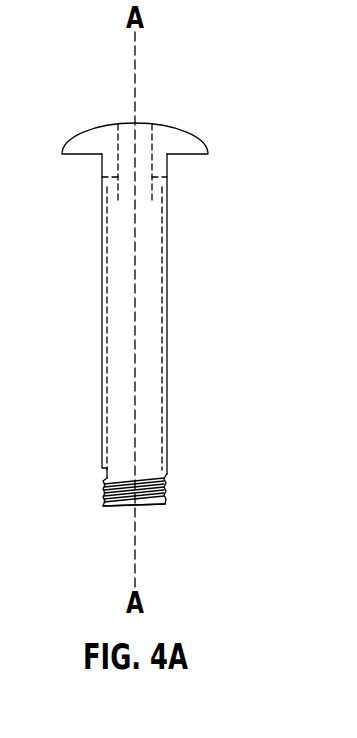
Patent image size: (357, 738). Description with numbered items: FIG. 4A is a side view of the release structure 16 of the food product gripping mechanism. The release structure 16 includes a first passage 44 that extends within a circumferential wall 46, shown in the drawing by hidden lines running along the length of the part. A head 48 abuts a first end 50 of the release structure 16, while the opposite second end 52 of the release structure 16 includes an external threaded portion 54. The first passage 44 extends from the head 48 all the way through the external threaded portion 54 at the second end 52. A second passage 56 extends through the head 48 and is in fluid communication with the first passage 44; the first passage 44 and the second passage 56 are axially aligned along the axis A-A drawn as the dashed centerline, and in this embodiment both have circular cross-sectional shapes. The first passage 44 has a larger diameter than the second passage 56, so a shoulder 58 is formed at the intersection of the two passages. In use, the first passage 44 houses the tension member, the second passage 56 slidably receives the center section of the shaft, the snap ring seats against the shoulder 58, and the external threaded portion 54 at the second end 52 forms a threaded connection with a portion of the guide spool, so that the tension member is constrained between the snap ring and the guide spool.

The release structure 16 is at (95, 97).
The first passage 44 is at (143, 507).
The circumferential wall 46 is at (170, 338).
The head 48 is at (197, 140).
The first end 50 is at (170, 186).
The second end 52 is at (170, 470).
The external threaded portion 54 is at (165, 490).
The second passage 56 is at (142, 124).
The shoulder 58 is at (108, 202).